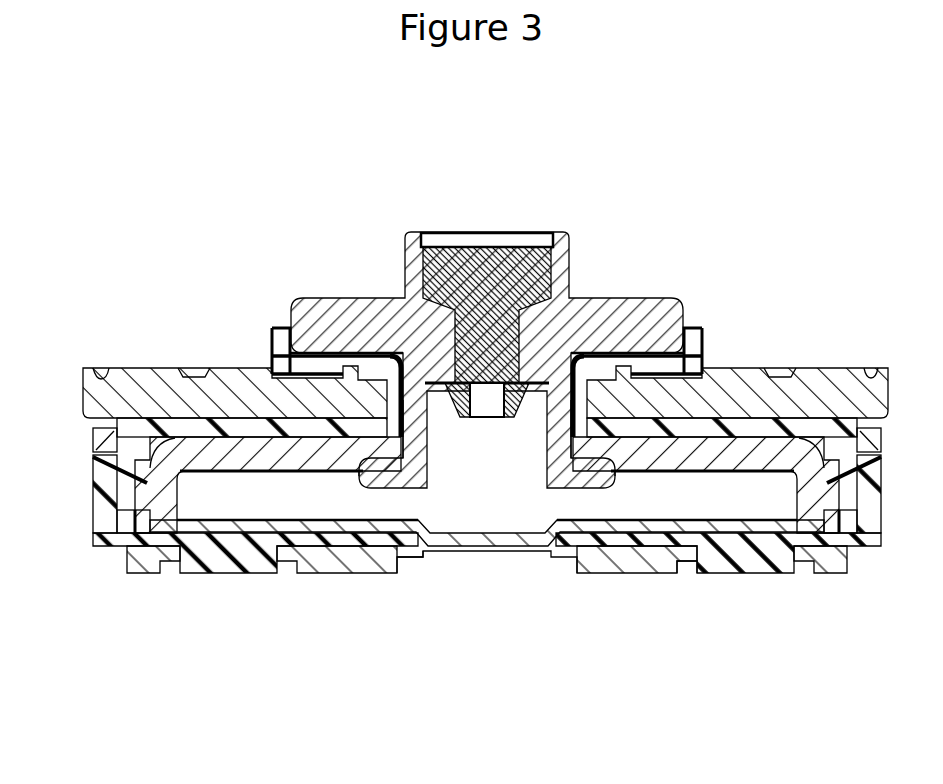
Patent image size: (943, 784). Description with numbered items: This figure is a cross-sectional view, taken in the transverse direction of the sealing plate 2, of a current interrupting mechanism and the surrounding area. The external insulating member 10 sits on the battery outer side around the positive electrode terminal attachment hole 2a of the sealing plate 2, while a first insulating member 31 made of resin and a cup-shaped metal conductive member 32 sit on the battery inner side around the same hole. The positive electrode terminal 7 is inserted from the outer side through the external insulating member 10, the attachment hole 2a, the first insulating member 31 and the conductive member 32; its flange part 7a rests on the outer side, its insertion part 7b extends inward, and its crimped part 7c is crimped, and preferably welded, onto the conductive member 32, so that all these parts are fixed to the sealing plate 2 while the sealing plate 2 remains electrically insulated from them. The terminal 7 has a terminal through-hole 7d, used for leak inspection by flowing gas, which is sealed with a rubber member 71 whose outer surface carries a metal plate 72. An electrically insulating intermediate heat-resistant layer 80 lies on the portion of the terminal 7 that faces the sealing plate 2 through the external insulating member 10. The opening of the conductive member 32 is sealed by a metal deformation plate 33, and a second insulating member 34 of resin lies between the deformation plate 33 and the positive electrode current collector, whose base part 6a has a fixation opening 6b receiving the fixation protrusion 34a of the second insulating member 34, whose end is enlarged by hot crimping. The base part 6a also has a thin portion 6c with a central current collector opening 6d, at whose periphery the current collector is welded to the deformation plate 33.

The sealing plate 2 is at (828, 392).
The positive electrode terminal attachment hole 2a is at (372, 405).
The base part 6a is at (650, 573).
The fixation opening 6b is at (708, 573).
The thin portion 6c is at (411, 557).
The current collector opening 6d is at (442, 552).
The positive electrode terminal 7 is at (487, 371).
The flange part 7a is at (368, 304).
The insertion part 7b is at (417, 433).
The crimped part 7c is at (380, 467).
The terminal through-hole 7d is at (465, 313).
The external insulating member 10 is at (476, 368).
The first insulating member 31 is at (745, 435).
The conductive member 32 is at (227, 453).
The deformation plate 33 is at (509, 540).
The second insulating member 34 is at (120, 545).
The fixation protrusion 34a is at (762, 562).
The rubber member 71 is at (496, 292).
The metal plate 72 is at (527, 242).
The intermediate heat-resistant layer 80 is at (308, 352).